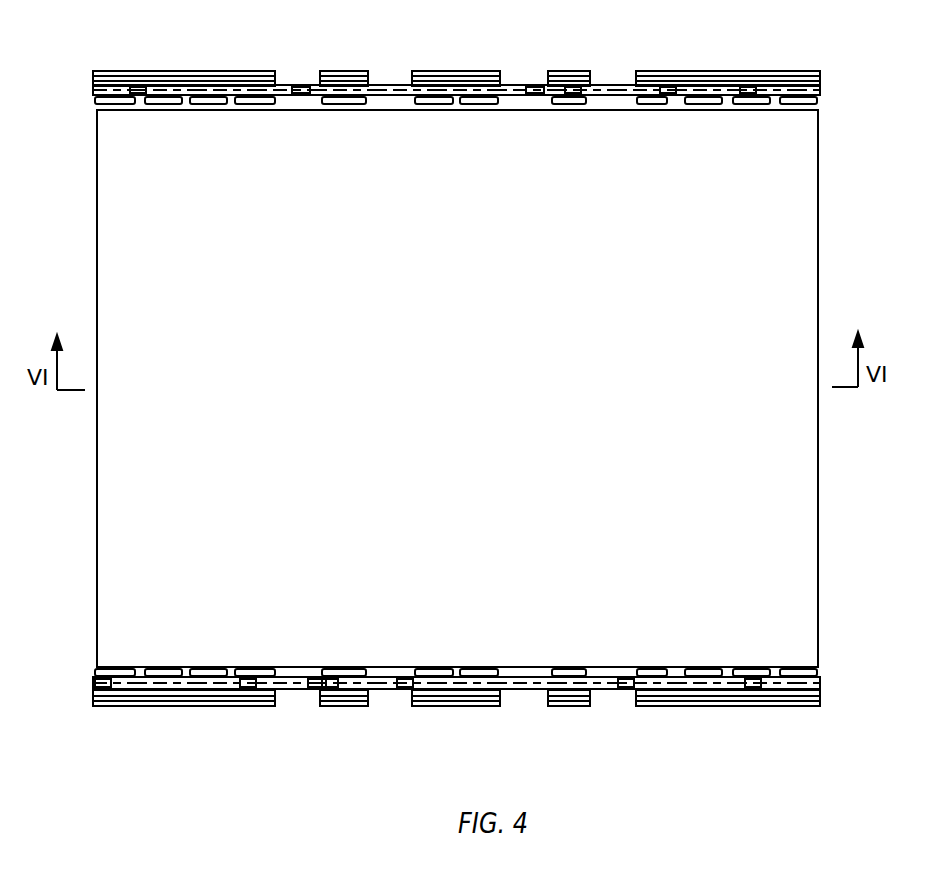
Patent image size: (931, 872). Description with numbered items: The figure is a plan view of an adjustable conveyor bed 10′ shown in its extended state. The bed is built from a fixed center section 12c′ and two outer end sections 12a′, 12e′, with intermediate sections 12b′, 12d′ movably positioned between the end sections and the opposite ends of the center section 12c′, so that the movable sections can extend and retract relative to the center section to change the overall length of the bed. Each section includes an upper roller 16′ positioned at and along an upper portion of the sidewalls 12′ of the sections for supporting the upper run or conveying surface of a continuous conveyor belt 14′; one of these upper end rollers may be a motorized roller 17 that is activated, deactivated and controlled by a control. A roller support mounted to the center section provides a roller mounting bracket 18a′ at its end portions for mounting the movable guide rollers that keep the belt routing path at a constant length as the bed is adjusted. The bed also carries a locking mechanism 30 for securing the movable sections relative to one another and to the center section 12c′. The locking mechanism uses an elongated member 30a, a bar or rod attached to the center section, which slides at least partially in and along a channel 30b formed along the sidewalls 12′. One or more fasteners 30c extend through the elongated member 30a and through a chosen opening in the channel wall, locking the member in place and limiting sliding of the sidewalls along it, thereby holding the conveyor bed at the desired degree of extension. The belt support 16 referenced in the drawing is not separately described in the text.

The adjustable conveyor bed 10′ is at (86, 252).
The end section 12a′ is at (156, 71).
The intermediate section 12b′ is at (357, 71).
The center section 12c′ is at (458, 71).
The intermediate section 12d′ is at (565, 71).
The end section 12e′ is at (716, 71).
The sidewalls 12′ is at (355, 704).
The continuous conveyor belt 14′ is at (396, 269).
The contact pad 16 is at (482, 668).
The upper roller 16′ is at (340, 105).
The motorized roller 17 is at (822, 100).
The roller mounting bracket 18a′ is at (200, 668).
The locking mechanism 30 is at (300, 105).
The elongated member 30a is at (535, 96).
The channel 30b is at (138, 96).
The fasteners 30c is at (573, 96).